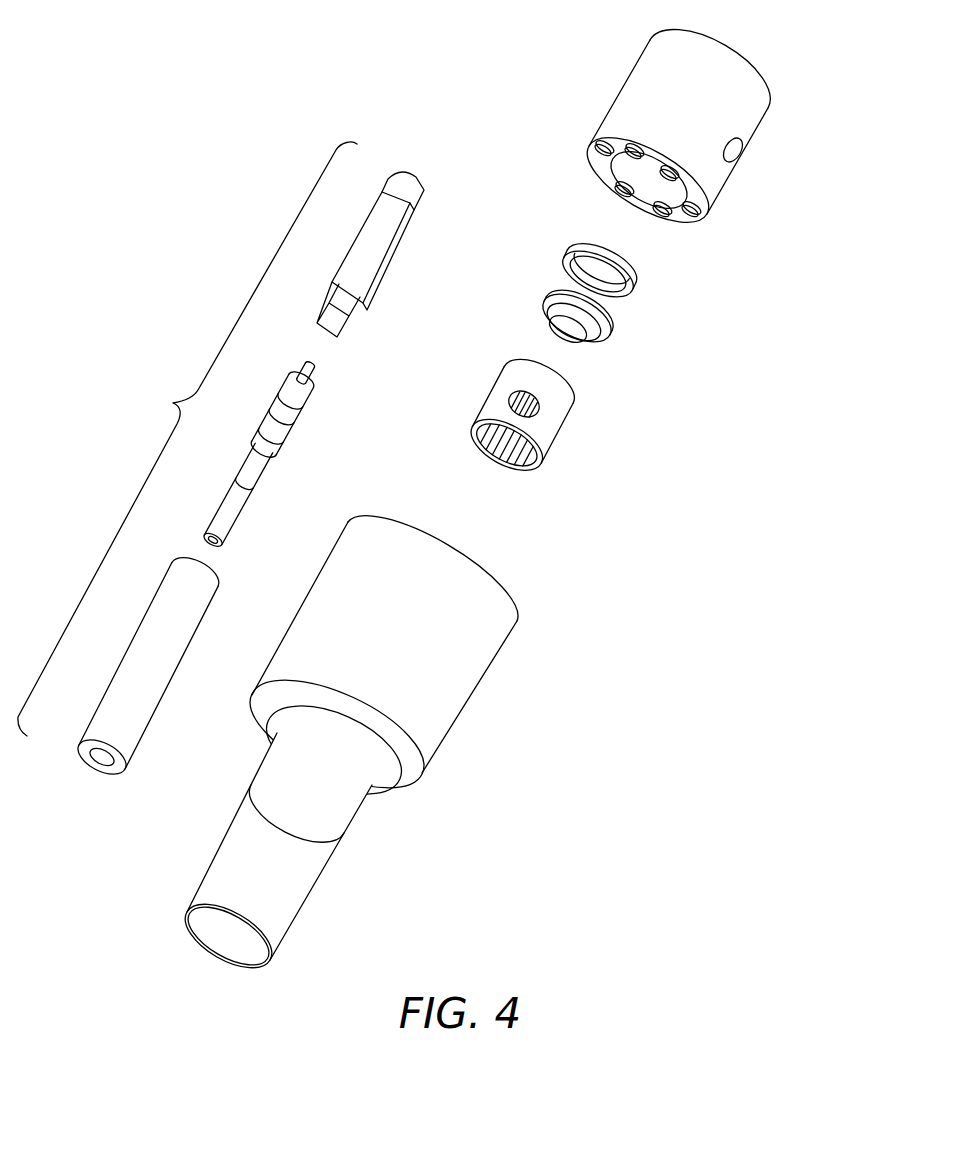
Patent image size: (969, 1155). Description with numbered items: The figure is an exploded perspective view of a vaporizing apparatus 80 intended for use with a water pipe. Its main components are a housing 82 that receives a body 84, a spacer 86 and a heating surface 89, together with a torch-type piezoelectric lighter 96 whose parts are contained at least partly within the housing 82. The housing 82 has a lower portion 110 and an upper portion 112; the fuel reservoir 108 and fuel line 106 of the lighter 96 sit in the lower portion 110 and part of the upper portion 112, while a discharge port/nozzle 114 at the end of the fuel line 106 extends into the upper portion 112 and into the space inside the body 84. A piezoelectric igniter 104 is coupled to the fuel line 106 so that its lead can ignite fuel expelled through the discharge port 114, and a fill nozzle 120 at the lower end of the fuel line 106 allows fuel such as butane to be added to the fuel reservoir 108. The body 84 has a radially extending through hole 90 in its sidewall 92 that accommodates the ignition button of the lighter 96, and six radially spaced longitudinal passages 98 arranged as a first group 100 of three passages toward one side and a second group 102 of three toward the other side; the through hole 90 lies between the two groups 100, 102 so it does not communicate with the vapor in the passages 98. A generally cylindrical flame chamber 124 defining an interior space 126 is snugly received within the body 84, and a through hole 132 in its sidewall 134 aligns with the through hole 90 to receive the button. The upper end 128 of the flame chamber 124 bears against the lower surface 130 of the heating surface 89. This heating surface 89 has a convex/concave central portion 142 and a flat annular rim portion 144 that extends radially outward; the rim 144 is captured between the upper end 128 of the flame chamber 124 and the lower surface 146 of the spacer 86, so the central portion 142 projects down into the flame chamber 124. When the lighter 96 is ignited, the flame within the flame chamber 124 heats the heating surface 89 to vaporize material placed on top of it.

The vaporizing apparatus 80 is at (655, 540).
The housing 82 is at (471, 696).
The body 84 is at (634, 66).
The spacer 86 is at (636, 281).
The heating surface 89 is at (591, 342).
The through hole 90 is at (743, 142).
The sidewall 92 is at (728, 183).
The piezoelectric lighter 96 is at (187, 439).
The longitudinal passages 98 is at (701, 205).
The first group of passages 100 is at (664, 165).
The second group of passages 102 is at (688, 212).
The piezoelectric igniter 104 is at (393, 254).
The fuel line 106 is at (278, 438).
The fuel reservoir 108 is at (153, 668).
The lower portion of the housing 110 is at (306, 859).
The upper portion of the housing 112 is at (501, 648).
The discharge port/nozzle 114 is at (420, 178).
The fill nozzle 120 is at (219, 547).
The flame chamber 124 is at (559, 430).
The interior space 126 is at (522, 458).
The upper end of the flame chamber 128 is at (532, 367).
The lower surface of the heating surface 130 is at (548, 303).
The through hole 132 is at (540, 401).
The sidewall of the flame chamber 134 is at (499, 395).
The central portion 142 is at (552, 322).
The rim portion 144 is at (598, 324).
The lower surface of the spacer 146 is at (563, 259).